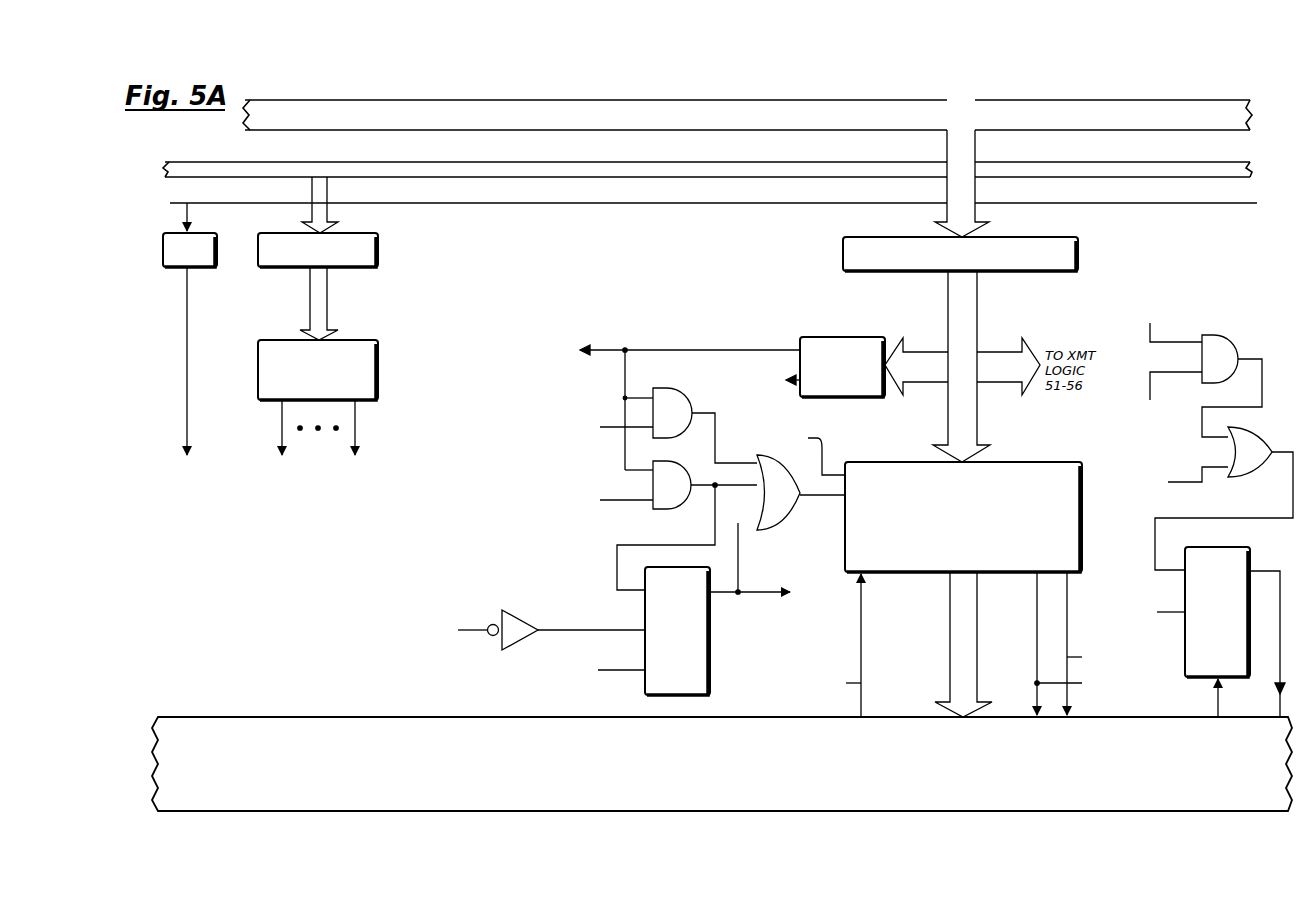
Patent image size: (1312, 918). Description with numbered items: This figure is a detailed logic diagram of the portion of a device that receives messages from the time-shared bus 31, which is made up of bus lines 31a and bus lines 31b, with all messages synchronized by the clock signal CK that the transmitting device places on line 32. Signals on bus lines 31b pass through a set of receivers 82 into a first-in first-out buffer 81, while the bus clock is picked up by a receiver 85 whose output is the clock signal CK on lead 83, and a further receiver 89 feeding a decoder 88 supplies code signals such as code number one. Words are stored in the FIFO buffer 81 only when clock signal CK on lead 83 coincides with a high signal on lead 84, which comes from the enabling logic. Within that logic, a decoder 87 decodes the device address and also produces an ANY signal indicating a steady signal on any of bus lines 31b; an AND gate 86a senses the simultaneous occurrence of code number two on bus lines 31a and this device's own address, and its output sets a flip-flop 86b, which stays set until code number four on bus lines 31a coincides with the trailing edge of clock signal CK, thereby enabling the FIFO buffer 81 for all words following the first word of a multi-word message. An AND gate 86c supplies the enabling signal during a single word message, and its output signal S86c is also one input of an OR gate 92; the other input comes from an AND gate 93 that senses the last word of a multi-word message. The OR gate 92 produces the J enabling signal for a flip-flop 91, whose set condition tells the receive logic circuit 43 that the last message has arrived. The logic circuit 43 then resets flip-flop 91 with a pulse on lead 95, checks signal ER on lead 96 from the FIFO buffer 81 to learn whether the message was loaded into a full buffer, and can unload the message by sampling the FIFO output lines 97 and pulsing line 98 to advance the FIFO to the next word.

The time-shared bus 31 is at (731, 127).
The bus lines 31a is at (1137, 162).
The bus lines 31b is at (1137, 100).
The clock line 32 is at (1130, 205).
The logic circuit 43 is at (787, 813).
The first-in first-out buffer 81 is at (1045, 462).
The set of receivers 82 is at (1080, 254).
The lead 83 is at (826, 448).
The lead 84 is at (826, 500).
The receiver 85 is at (165, 270).
The AND gate 86a is at (655, 511).
The flip-flop 86b is at (738, 653).
The AND gate 86c is at (641, 448).
The decoder 87 is at (845, 337).
The decoder 88 is at (380, 362).
The receiver 89 is at (380, 250).
The flip-flop 91 is at (1183, 648).
The OR gate 92 is at (1266, 432).
The AND gate 93 is at (1232, 340).
The lead 95 is at (1216, 701).
The lead 96 is at (1068, 620).
The FIFO output lines 97 is at (950, 668).
The line 98 is at (861, 637).